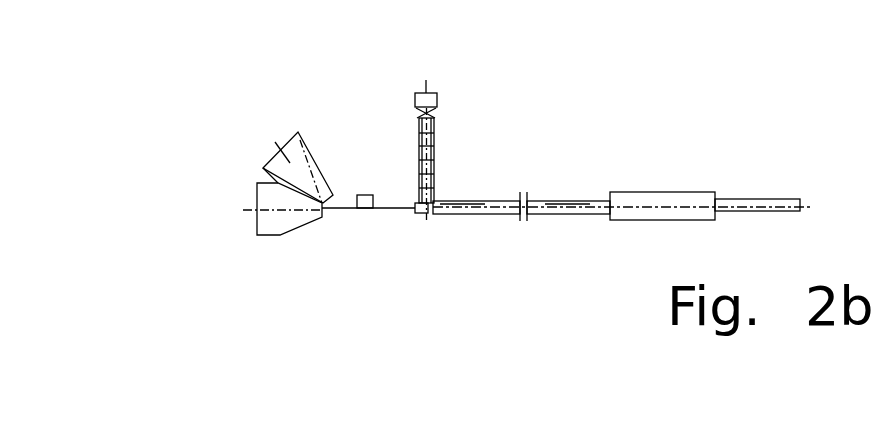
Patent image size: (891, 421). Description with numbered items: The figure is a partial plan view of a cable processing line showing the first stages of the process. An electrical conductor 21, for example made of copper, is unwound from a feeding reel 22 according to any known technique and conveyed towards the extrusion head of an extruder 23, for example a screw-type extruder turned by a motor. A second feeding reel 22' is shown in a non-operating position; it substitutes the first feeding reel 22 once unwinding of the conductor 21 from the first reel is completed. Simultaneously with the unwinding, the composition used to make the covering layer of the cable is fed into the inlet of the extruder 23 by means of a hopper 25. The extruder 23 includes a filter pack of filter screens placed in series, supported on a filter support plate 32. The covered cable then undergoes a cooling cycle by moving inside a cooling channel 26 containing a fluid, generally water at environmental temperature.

The electrical conductor 21 is at (395, 210).
The feeding reel 22 is at (282, 247).
The second feeding reel 22' is at (305, 128).
The extruder 23 is at (428, 152).
The hopper 25 is at (432, 113).
The cooling channel 26 is at (778, 203).
The filter support plate 32 is at (408, 191).